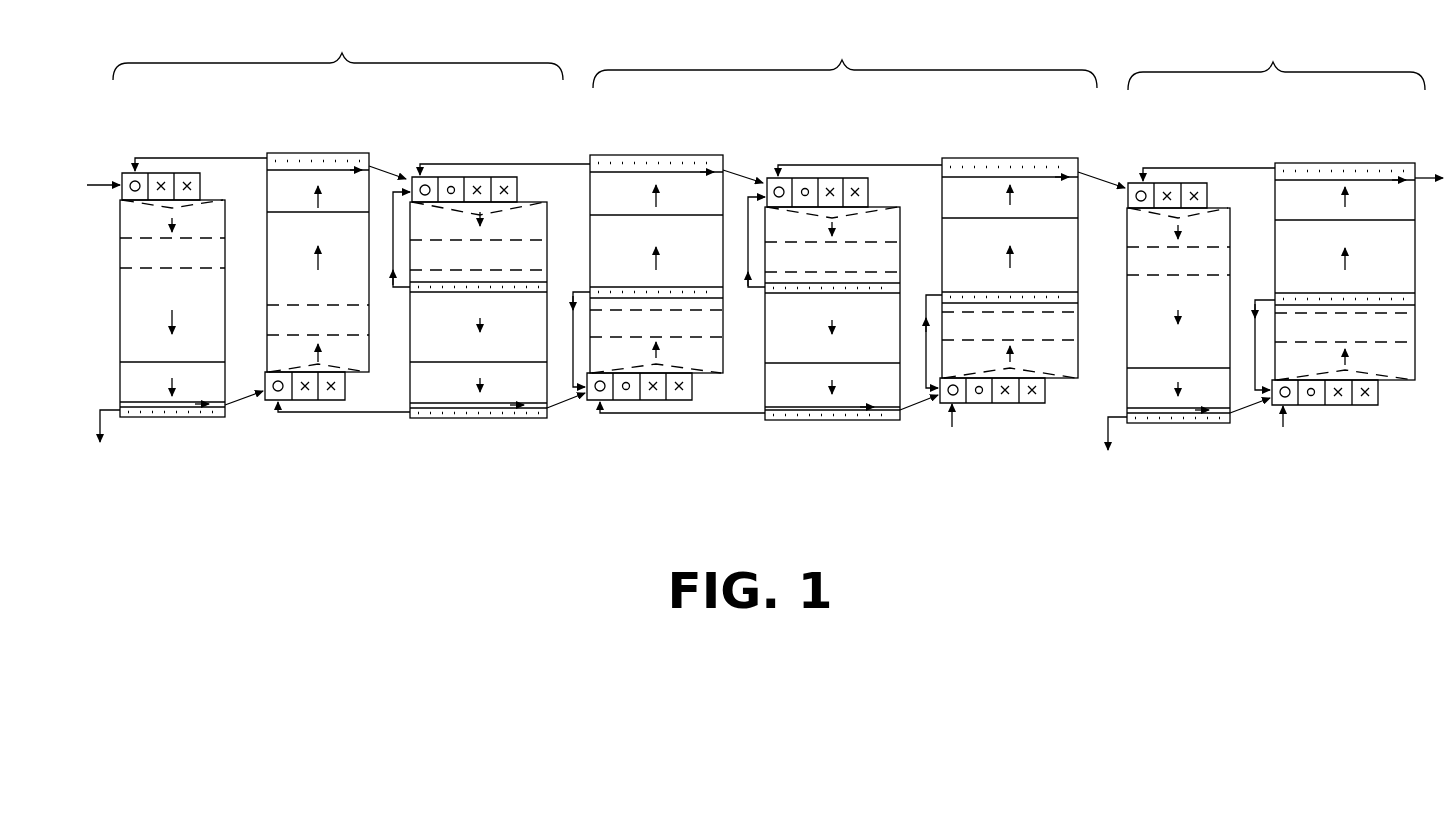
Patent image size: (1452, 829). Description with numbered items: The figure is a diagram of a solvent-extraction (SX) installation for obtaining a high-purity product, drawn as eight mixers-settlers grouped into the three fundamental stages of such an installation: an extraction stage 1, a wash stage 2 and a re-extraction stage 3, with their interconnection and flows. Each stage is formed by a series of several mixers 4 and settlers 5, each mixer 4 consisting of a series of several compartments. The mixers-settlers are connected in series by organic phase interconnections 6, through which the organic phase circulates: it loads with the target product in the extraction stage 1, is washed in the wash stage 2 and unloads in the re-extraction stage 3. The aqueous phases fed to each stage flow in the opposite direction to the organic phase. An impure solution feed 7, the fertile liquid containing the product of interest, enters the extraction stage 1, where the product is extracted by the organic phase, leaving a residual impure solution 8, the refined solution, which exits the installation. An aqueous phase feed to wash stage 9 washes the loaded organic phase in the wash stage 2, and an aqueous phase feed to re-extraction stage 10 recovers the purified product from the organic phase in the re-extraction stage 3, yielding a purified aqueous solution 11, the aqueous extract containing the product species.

The extraction stage 1 is at (338, 45).
The wash stage 2 is at (845, 53).
The re-extraction stage 3 is at (1276, 54).
The mixer 4 is at (406, 174).
The settler 5 is at (552, 213).
The organic phase interconnection 6 is at (90, 184).
The impure solution feed 7 is at (421, 158).
The residual impure solution 8 is at (98, 425).
The aqueous phase feed to wash stage 9 is at (955, 420).
The aqueous phase feed to re-extraction stage 10 is at (1290, 422).
The purified aqueous solution 11 is at (1107, 420).